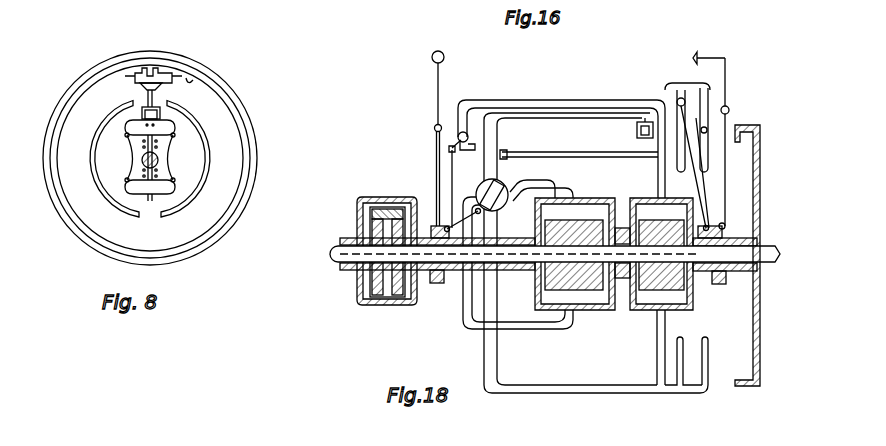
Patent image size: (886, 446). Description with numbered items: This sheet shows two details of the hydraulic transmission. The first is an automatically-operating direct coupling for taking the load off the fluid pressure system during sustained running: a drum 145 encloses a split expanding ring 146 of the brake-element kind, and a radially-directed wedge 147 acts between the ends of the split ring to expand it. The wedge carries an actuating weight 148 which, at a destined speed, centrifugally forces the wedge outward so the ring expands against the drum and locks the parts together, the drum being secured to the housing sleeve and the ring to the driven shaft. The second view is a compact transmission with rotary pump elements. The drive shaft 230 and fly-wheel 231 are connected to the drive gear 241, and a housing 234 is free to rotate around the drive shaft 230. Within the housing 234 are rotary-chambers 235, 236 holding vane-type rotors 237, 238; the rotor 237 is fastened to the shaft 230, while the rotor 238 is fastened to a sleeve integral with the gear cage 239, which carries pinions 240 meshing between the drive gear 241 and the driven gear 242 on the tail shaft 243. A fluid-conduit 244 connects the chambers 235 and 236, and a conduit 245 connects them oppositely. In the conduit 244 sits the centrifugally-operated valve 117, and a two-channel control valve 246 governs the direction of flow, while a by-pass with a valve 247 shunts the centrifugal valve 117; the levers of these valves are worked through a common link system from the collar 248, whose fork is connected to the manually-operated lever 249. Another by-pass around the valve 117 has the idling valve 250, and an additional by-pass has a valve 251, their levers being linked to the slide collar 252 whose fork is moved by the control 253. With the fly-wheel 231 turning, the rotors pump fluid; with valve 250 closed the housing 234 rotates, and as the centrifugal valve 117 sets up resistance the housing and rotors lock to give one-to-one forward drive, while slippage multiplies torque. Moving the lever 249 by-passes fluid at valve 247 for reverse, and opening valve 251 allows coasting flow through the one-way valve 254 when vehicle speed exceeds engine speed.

In FIG. 8, the drum 145 is at (253, 160).
In FIG. 8, the split expanding ring 146 is at (189, 78).
In FIG. 8, the radially-directed wedge 147 is at (138, 86).
In FIG. 8, the actuating weight 148 is at (177, 130).
In FIG. 18, the centrifugal valve 117 is at (636, 130).
In FIG. 18, the drive shaft 230 is at (770, 252).
In FIG. 18, the fly-wheel 231 is at (760, 188).
In FIG. 18, the housing 234 is at (622, 200).
In FIG. 18, the rotary-chamber 235 is at (650, 210).
In FIG. 18, the rotary-chamber 236 is at (560, 210).
In FIG. 18, the rotor 237 is at (660, 296).
In FIG. 18, the rotor 238 is at (548, 272).
In FIG. 18, the gear cage 239 is at (398, 198).
In FIG. 18, the pinion 240 is at (376, 210).
In FIG. 18, the drive gear 241 is at (398, 298).
In FIG. 18, the driven gear 242 is at (375, 298).
In FIG. 18, the tail shaft 243 is at (333, 262).
In FIG. 18, the fluid-conduit 244 is at (560, 104).
In FIG. 18, the conduit 245 is at (498, 360).
In FIG. 18, the control valve 246 is at (496, 180).
In FIG. 18, the by-pass valve 247 is at (460, 132).
In FIG. 18, the collar 248 is at (442, 284).
In FIG. 18, the manually-operated lever 249 is at (435, 96).
In FIG. 18, the idling control valve 250 is at (674, 92).
In FIG. 18, the by-pass valve 251 is at (702, 84).
In FIG. 18, the slide collar 252 is at (726, 286).
In FIG. 18, the control 253 is at (714, 58).
In FIG. 18, the one-way valve 254 is at (712, 130).